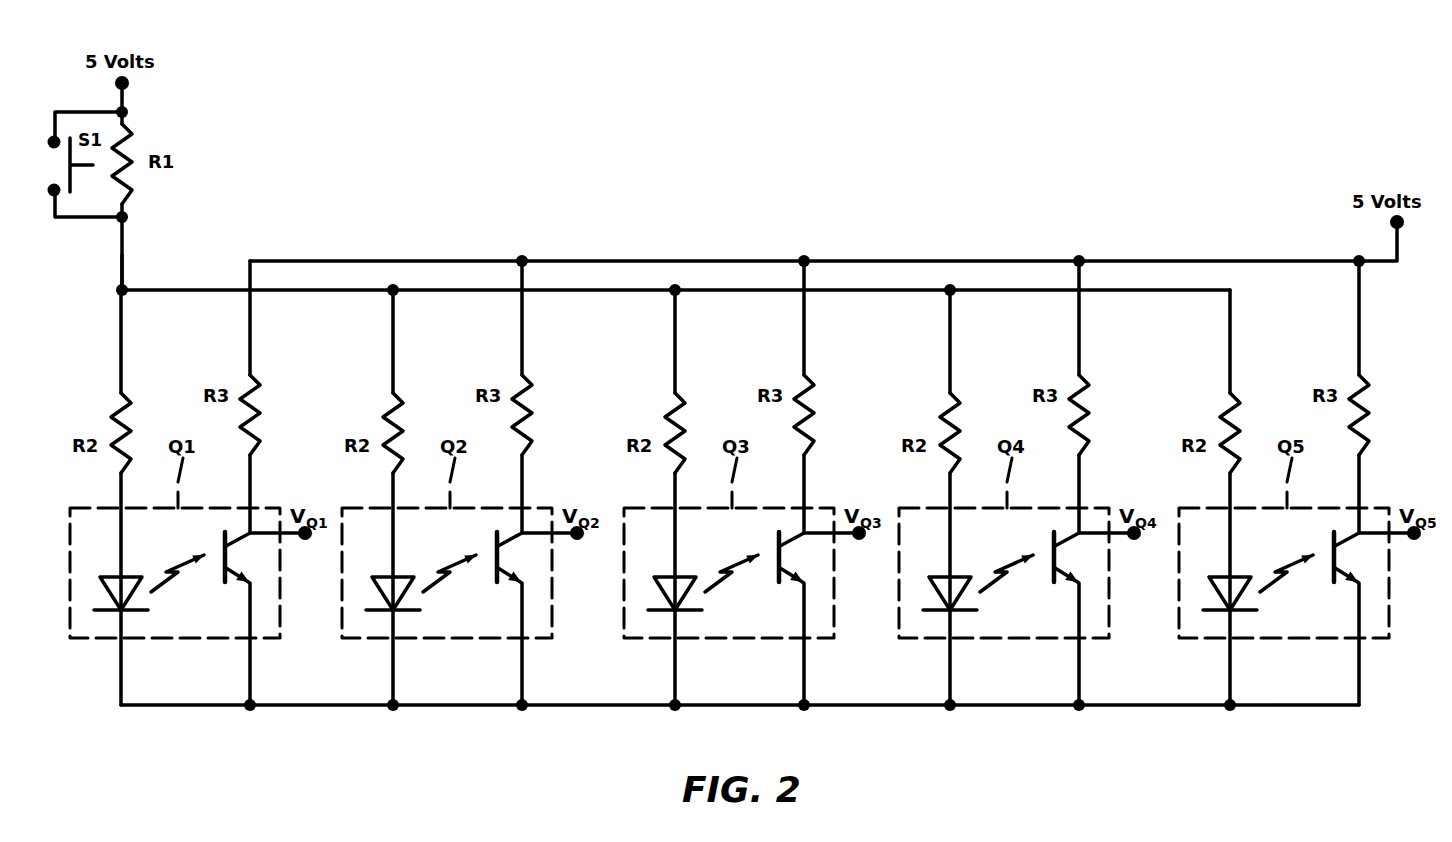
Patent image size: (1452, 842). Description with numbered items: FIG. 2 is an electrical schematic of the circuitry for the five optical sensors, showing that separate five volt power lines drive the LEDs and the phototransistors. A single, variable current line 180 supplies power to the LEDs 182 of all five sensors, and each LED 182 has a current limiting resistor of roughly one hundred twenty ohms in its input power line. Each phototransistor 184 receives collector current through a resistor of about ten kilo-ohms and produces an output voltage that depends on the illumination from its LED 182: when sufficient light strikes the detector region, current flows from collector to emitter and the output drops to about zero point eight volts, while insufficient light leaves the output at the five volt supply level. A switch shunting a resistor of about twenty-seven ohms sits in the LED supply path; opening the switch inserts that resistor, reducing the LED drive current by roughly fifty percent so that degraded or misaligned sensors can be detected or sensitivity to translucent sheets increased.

The variable current line 180 is at (123, 248).
The LED 182 is at (151, 603).
The phototransistor 184 is at (252, 560).